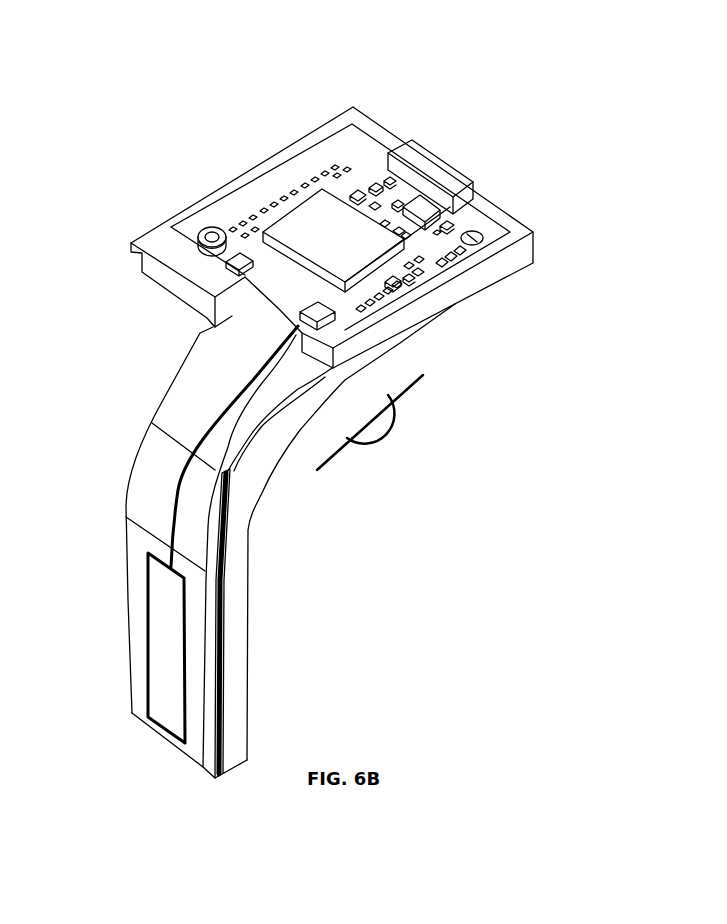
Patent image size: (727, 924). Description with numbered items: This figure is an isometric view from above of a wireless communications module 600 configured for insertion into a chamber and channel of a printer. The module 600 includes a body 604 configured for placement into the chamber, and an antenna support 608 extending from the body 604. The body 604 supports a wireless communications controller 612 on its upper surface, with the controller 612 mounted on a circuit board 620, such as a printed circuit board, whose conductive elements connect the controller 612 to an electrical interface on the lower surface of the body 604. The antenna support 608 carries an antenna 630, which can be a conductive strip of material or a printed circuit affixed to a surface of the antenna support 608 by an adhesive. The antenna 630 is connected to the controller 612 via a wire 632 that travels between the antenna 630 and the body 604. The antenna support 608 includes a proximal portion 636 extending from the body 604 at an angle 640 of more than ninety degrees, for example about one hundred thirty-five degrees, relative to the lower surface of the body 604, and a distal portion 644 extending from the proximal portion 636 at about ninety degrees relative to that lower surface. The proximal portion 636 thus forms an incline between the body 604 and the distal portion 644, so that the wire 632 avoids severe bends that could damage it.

The wireless communications module 600 is at (496, 136).
The body 604 is at (367, 104).
The antenna support 608 is at (272, 502).
The wireless communications controller 612 is at (311, 205).
The circuit board 620 is at (343, 168).
The antenna 630 is at (162, 658).
The wire 632 is at (217, 413).
The proximal portion 636 is at (167, 410).
The angle 640 is at (392, 422).
The distal portion 644 is at (128, 602).